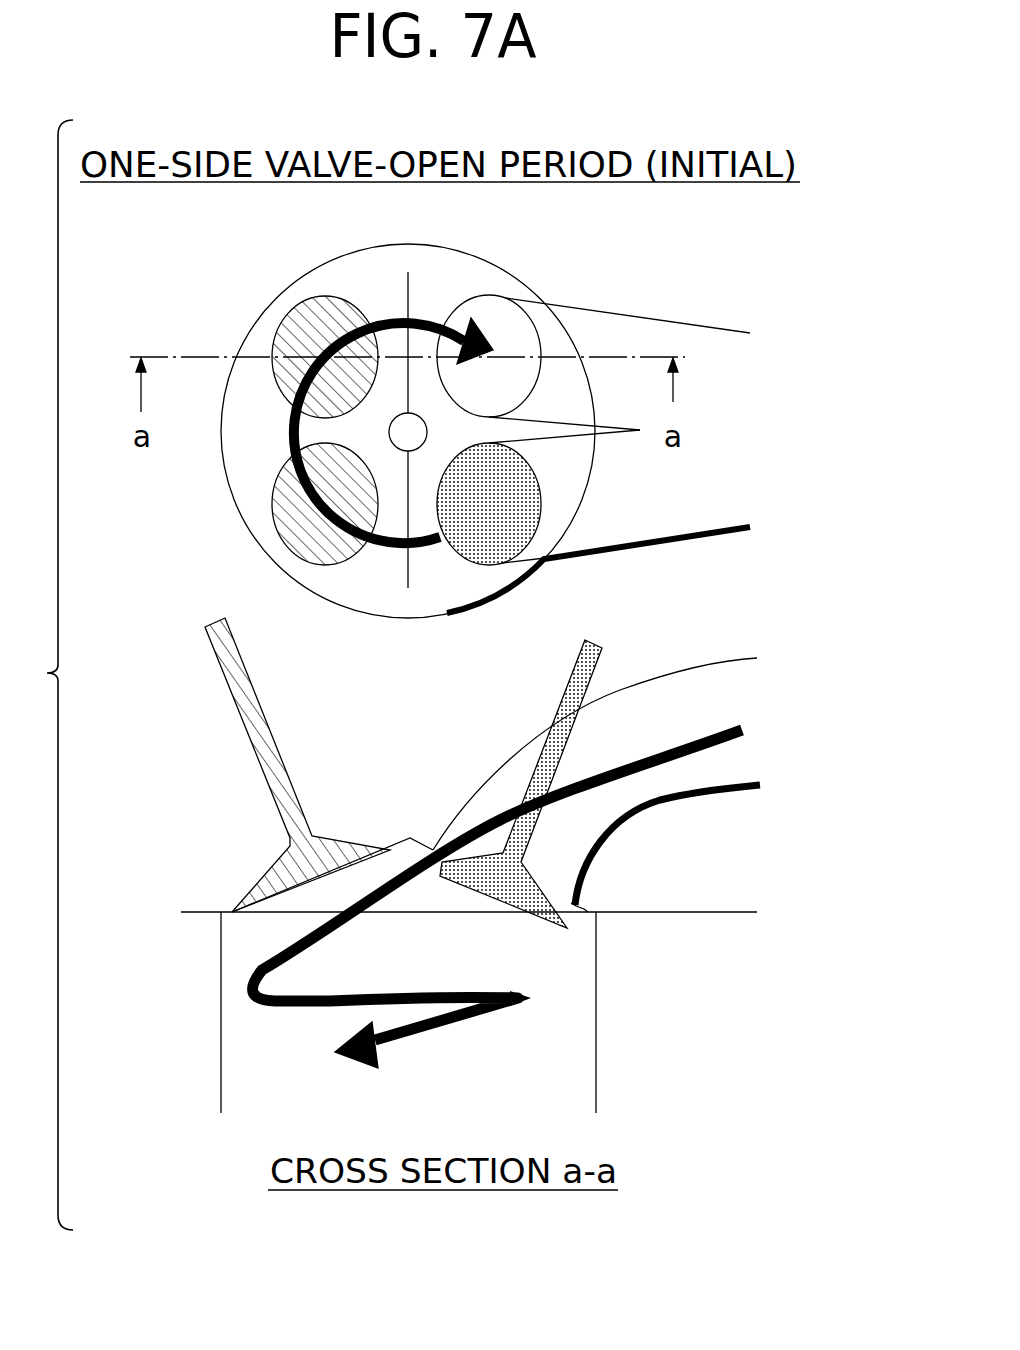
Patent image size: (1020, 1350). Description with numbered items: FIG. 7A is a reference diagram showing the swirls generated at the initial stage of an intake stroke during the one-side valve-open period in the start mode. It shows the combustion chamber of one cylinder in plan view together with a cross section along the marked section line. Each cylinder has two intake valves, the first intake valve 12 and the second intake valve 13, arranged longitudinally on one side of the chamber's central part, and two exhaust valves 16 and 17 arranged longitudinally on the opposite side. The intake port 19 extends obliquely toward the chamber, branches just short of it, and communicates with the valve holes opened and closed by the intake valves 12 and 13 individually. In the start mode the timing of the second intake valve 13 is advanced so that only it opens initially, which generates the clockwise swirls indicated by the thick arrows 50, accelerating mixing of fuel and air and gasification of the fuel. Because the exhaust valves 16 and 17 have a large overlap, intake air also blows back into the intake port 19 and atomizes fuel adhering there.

The first intake valve 12 is at (517, 323).
The second intake valve 13 is at (518, 493).
The exhaust valve 16 is at (300, 318).
The exhaust valve 17 is at (283, 507).
The intake port 19 is at (655, 318).
The swirl / tumble flow 50 is at (430, 543).